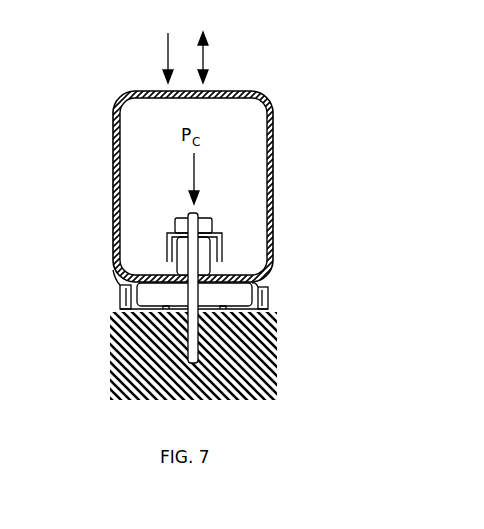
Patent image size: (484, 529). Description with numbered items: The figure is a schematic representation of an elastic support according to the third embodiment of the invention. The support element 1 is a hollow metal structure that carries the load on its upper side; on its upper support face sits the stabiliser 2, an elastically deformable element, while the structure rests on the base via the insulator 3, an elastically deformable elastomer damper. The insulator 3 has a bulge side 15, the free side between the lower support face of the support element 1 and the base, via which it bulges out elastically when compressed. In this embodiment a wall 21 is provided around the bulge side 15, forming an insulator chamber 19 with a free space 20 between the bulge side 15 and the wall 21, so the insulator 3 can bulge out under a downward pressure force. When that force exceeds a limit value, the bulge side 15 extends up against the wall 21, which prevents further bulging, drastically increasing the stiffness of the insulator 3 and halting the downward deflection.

The support element 1 is at (273, 115).
The stabiliser 2 is at (205, 253).
The insulator 3 is at (142, 293).
The bulge side 15 is at (255, 283).
The insulator chamber 19 is at (108, 277).
The free space 20 is at (257, 288).
The wall 21 is at (268, 295).